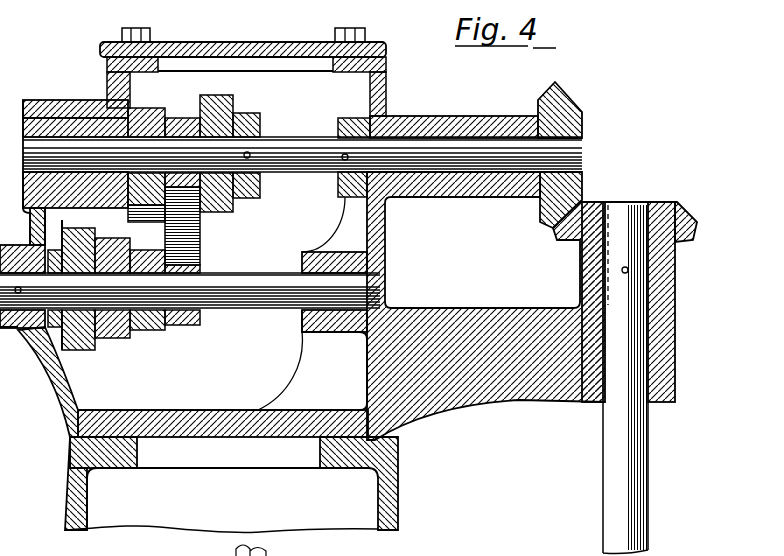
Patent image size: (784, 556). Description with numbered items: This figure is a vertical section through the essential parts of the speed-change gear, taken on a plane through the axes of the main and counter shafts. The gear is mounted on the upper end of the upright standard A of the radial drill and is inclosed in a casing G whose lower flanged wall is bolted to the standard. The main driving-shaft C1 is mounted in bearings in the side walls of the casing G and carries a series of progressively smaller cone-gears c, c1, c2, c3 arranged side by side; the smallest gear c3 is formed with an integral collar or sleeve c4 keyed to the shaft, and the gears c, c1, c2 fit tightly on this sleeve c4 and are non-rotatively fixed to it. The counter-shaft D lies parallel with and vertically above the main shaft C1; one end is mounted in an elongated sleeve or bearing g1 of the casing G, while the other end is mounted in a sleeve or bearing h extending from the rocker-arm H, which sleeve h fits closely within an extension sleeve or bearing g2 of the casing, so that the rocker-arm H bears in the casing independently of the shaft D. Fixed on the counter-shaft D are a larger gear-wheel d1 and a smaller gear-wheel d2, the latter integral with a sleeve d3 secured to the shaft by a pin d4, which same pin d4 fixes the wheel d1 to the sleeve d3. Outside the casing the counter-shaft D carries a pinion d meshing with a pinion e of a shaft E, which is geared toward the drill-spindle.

The upright standard A is at (231, 485).
The casing G is at (55, 388).
The elongated sleeve or bearing g1 is at (463, 121).
The extension sleeve or bearing g2 is at (41, 104).
The sleeve or bearing h is at (62, 128).
The rocker-arm H is at (150, 115).
The counter-shaft D is at (311, 151).
The pinion d is at (571, 107).
The gear-wheel d1 is at (237, 95).
The gear-wheel d2 is at (186, 118).
The sleeve d3 is at (262, 186).
The pin d4 is at (250, 153).
The main driving-shaft C1 is at (262, 278).
The collar or sleeve c4 is at (124, 272).
The cone-gear c is at (83, 352).
The cone-gear c1 is at (113, 340).
The cone-gear c2 is at (148, 332).
The cone-gear c3 is at (183, 327).
The shaft E is at (650, 428).
The pinion e is at (697, 222).